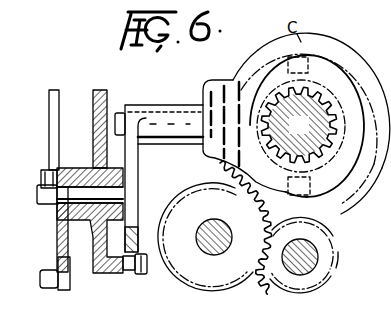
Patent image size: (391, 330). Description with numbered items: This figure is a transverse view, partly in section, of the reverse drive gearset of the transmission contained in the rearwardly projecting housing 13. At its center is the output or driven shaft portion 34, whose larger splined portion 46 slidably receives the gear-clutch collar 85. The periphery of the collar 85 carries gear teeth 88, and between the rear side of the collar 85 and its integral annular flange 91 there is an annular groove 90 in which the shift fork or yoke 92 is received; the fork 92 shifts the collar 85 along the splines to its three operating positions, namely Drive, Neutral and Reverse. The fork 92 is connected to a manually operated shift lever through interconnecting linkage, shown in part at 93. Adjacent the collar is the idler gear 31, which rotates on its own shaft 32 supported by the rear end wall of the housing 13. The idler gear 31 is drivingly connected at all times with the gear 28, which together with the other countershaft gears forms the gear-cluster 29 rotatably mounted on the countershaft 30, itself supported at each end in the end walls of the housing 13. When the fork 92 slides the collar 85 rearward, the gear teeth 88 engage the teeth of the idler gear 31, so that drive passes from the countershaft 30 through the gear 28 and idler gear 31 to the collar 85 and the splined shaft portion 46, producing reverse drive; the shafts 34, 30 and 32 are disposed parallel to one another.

The housing 13 is at (91, 90).
The gear 28 is at (338, 273).
The gear-cluster 29 is at (266, 293).
The countershaft 30 is at (318, 257).
The idler gear 31 is at (196, 181).
The idler gear shaft 32 is at (212, 255).
The output shaft portion 34 is at (308, 133).
The splined portion 46 is at (337, 125).
The gear-clutch collar 85 is at (356, 68).
The gear teeth 88 is at (341, 44).
The annular groove 90 is at (243, 70).
The annular flange 91 is at (353, 185).
The shift fork 92 is at (200, 86).
The interconnecting linkage 93 is at (116, 250).